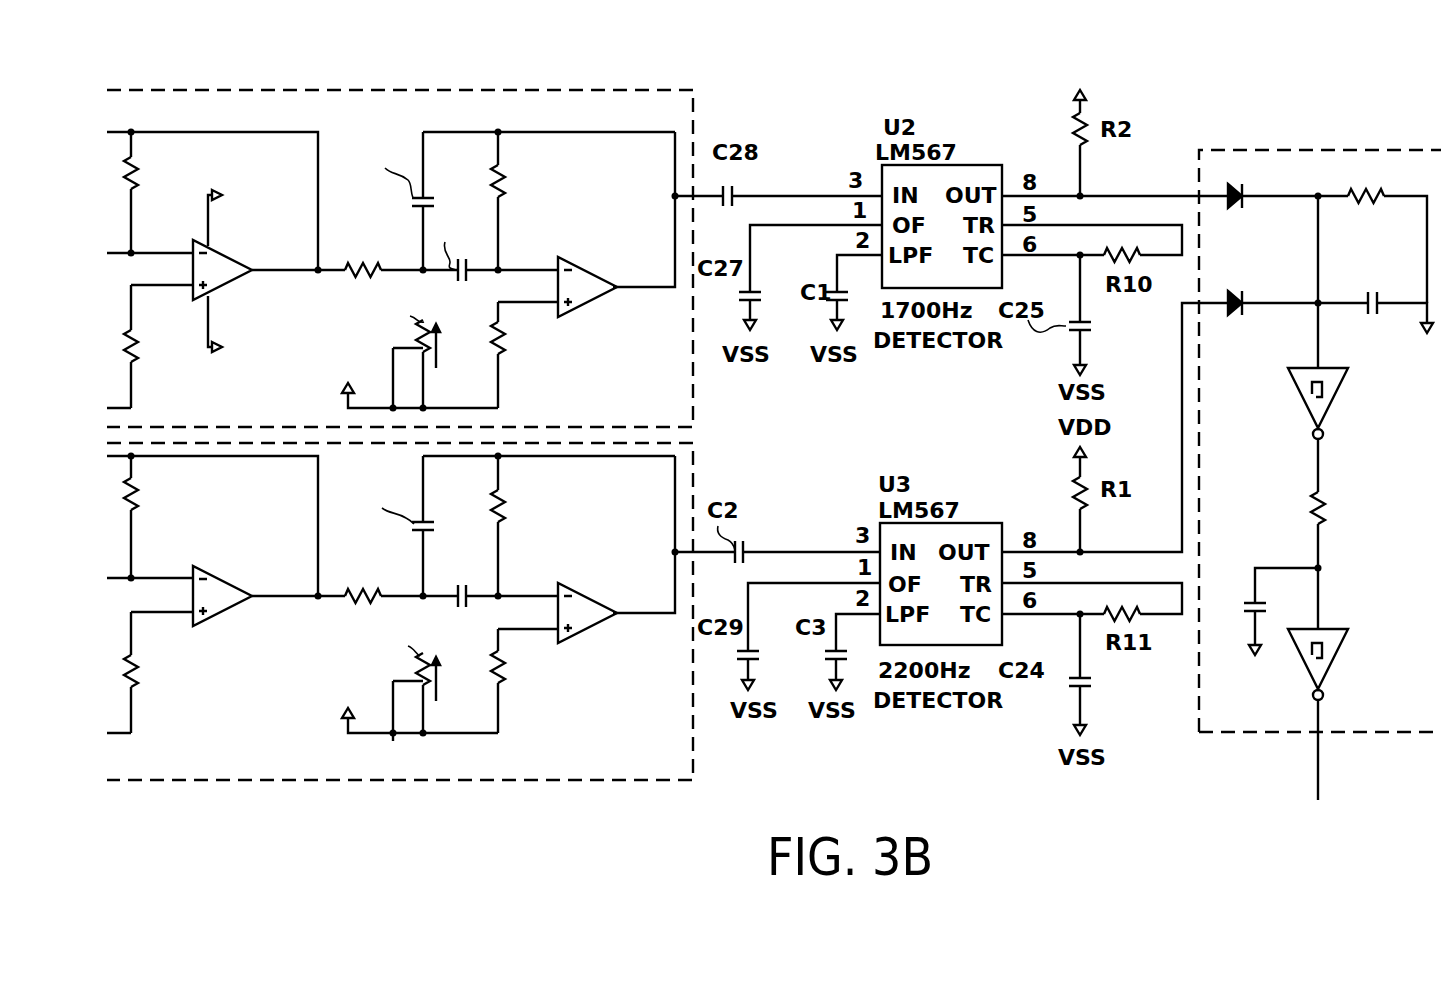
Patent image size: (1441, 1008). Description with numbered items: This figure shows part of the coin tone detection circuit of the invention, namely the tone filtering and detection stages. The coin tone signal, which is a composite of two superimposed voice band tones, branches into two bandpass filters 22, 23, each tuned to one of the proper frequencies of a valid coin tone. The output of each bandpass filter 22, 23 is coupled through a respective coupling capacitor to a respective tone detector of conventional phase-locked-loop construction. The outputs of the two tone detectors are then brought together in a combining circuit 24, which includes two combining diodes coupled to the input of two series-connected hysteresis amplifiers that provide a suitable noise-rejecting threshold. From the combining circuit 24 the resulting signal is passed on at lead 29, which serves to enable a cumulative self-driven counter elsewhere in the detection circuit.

The bandpass filter 22 is at (690, 106).
The bandpass filter 23 is at (680, 763).
The combining circuit 24 is at (1391, 716).
The lead 29 is at (1318, 761).